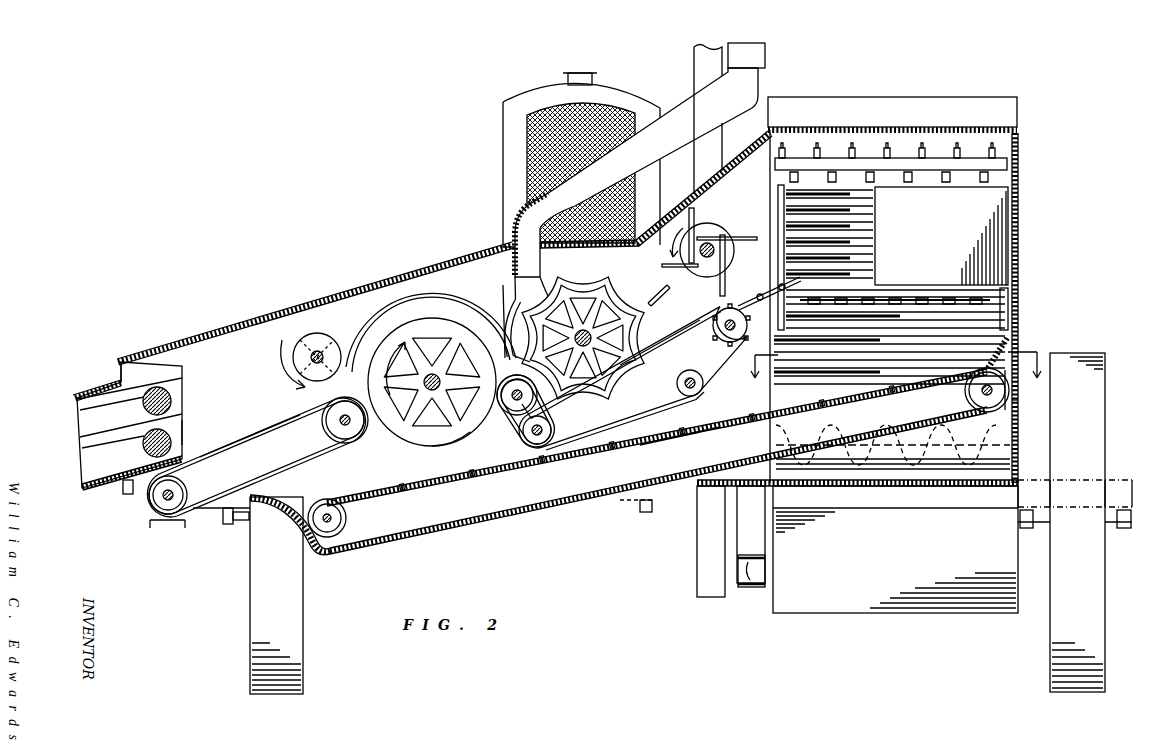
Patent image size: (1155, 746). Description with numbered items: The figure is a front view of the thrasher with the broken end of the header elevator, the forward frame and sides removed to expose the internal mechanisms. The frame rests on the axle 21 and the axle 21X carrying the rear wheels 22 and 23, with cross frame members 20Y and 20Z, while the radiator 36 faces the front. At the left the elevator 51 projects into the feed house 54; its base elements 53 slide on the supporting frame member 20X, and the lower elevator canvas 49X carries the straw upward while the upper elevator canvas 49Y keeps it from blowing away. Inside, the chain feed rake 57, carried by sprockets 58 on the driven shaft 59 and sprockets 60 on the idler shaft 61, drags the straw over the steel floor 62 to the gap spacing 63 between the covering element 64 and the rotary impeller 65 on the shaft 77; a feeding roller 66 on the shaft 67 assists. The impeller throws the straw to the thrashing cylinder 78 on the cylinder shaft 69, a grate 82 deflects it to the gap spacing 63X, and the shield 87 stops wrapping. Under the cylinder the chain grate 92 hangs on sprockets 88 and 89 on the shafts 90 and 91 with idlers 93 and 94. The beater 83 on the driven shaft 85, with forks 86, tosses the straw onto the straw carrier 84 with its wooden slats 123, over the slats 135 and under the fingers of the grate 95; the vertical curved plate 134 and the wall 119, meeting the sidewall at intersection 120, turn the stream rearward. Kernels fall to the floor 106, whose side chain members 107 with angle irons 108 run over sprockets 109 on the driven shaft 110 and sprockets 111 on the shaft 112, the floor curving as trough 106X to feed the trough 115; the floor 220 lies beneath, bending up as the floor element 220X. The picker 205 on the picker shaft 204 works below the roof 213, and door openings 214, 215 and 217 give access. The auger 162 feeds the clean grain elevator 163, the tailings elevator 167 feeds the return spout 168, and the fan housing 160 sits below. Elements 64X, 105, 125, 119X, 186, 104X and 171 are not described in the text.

The clean grain elevator 163 is at (694, 57).
The tailings elevator 167 is at (766, 56).
The return spout 168 is at (636, 172).
The radiator 36 is at (525, 150).
The roof 213 is at (892, 113).
The picker 205 is at (942, 163).
The picker shaft 204 is at (1008, 164).
The wall intersection 120 is at (775, 197).
The beater 83 is at (706, 242).
The driven shaft 85 is at (712, 248).
The vertical curved plate 134 is at (941, 236).
The wall 119 is at (1018, 243).
The door opening 217 is at (450, 264).
The covering element 64 is at (440, 298).
The guide plate 64X is at (505, 300).
The chute 105 is at (520, 306).
The cylinder shaft 69 is at (583, 330).
The thrashing cylinder 78 is at (617, 294).
The shield 87 is at (670, 288).
The forks 86 is at (726, 292).
The slats 135 is at (920, 297).
The straw carrier 84 is at (1010, 291).
The roller bar 125 is at (1010, 309).
The wooden slats 123 is at (1010, 328).
The brace 119X is at (990, 367).
The shaft 67 is at (318, 353).
The gap spacing 63 is at (380, 331).
The rotary impeller 65 is at (432, 382).
The grate 95 is at (746, 307).
The shaft 90 is at (736, 333).
The sprocket 88 is at (736, 341).
The elevator 51 is at (100, 388).
The feed house 54 is at (149, 425).
The feeding roller 66 is at (300, 356).
The chain grate 92 is at (664, 342).
The upper elevator canvas 49Y is at (78, 410).
The wall 186 is at (183, 434).
The chain feed rake 57 is at (236, 438).
The grate 82 is at (503, 386).
The gap spacing 63X is at (530, 392).
The idler 93 is at (677, 386).
The trough 106X is at (968, 386).
The shaft 112 is at (1005, 396).
The door opening 215 is at (1018, 400).
The lower elevator canvas 49X is at (78, 446).
The sprockets 58 is at (323, 428).
The driven shaft 59 is at (346, 427).
The impeller shaft 77 is at (430, 387).
The rim 104X is at (483, 424).
The shaft 91 is at (530, 406).
The idler 94 is at (551, 430).
The sprocket 89 is at (510, 426).
The angle irons 108 is at (673, 434).
The side chain members 107 is at (710, 426).
The floor 106 is at (688, 438).
The sprockets 111 is at (988, 398).
The rear wheel 22 is at (1077, 522).
The sprockets 60 is at (186, 481).
The idler shaft 61 is at (174, 496).
The steel floor 62 is at (230, 452).
The driven shaft 110 is at (328, 514).
The sprockets 109 is at (346, 518).
The trough 115 is at (893, 447).
The base elements 53 is at (100, 494).
The supporting frame member 20X is at (125, 496).
The floor element 220X is at (167, 530).
The axle 21X is at (241, 522).
The door opening 214 is at (290, 530).
The floor 220 is at (490, 522).
The cross frame member 20Z is at (650, 512).
The cross frame member 20Y is at (1075, 501).
The axle 21 is at (1120, 528).
The rear wheel 23 is at (276, 595).
The auger 162 is at (748, 580).
The fan housing 160 is at (895, 549).
The guide 171 is at (518, 338).